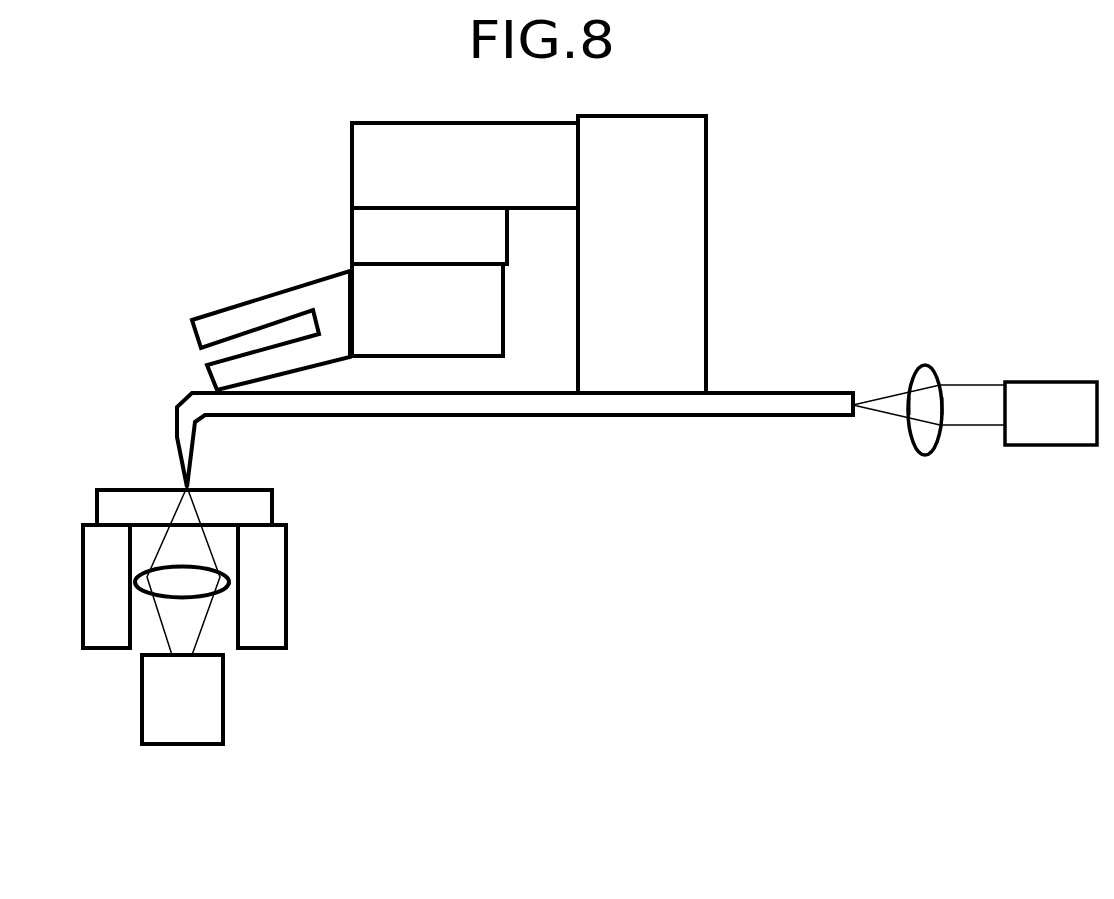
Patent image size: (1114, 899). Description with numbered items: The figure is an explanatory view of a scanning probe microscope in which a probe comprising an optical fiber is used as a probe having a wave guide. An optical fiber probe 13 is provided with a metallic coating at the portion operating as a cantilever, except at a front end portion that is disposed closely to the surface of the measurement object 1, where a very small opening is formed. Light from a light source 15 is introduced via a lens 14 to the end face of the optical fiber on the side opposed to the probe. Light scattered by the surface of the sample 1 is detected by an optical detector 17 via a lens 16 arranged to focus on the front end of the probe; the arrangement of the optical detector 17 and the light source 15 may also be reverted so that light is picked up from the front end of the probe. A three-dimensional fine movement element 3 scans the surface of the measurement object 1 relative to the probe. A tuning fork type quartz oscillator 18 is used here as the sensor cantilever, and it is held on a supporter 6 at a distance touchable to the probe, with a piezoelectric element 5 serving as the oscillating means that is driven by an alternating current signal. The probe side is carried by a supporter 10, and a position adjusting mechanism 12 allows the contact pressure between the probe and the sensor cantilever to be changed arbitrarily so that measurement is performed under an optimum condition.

The measurement object 1 is at (243, 512).
The three-dimensional fine movement element 3 is at (90, 647).
The piezoelectric element 5 is at (373, 238).
The supporter 6 is at (470, 323).
The supporter 10 is at (390, 186).
The position adjusting mechanism 12 is at (675, 258).
The optical fiber probe 13 is at (322, 407).
The lens 14 is at (927, 378).
The light source 15 is at (1038, 393).
The lens 16 is at (230, 580).
The optical detector 17 is at (167, 730).
The tuning fork type quartz oscillator 18 is at (228, 375).